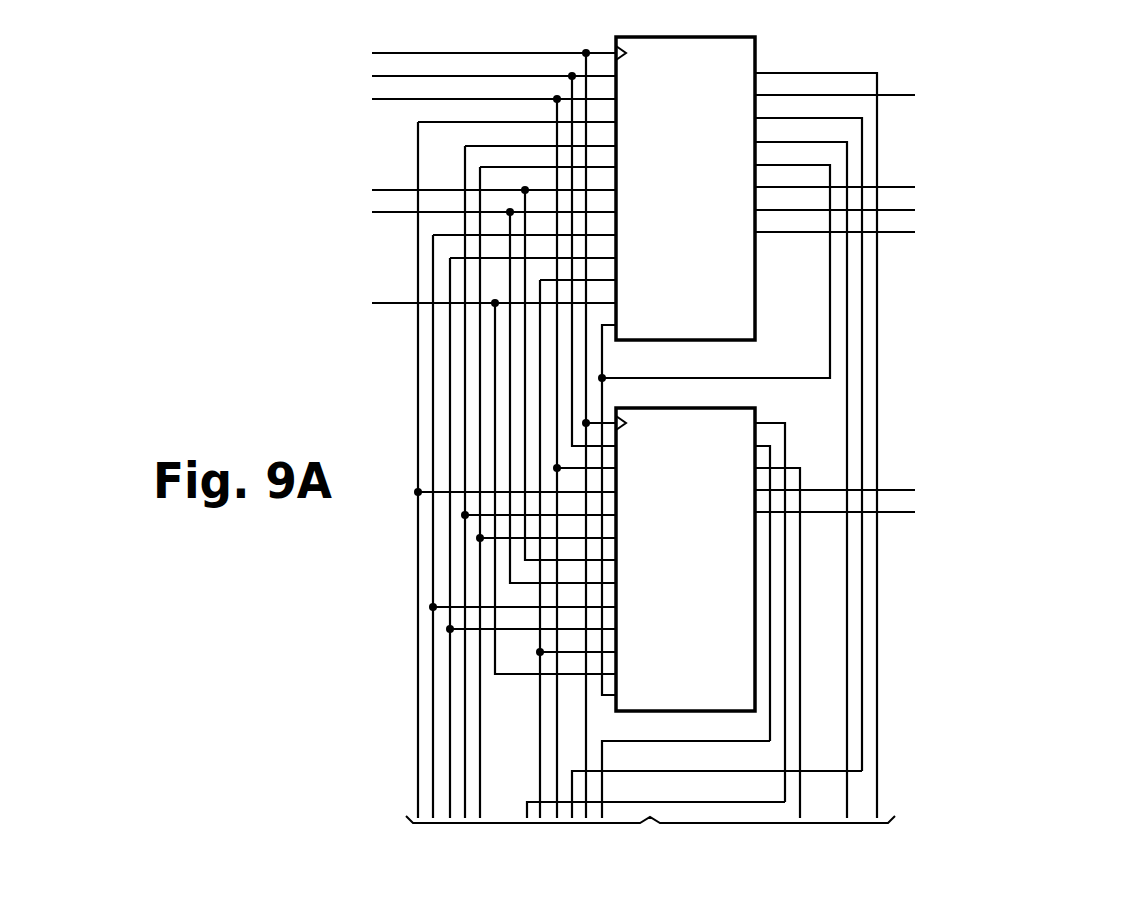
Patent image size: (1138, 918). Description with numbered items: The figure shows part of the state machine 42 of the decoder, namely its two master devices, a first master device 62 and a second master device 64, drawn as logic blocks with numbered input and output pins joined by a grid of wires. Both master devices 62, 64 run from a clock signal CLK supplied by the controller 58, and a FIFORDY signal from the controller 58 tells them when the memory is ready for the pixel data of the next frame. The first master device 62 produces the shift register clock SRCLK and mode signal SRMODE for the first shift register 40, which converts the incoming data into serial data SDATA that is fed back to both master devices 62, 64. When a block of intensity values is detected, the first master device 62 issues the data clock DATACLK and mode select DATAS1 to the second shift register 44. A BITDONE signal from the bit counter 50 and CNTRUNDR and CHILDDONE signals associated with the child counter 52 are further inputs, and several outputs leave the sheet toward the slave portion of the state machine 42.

The state machine 42 is at (252, 660).
The first master device 62 is at (702, 163).
The second master device 64 is at (702, 551).
The controller 58 is at (664, 430).
The first shift register 40 is at (653, 256).
The bit counter 50 is at (404, 453).
The child counter 52 is at (387, 381).
The second shift register 44 is at (930, 141).